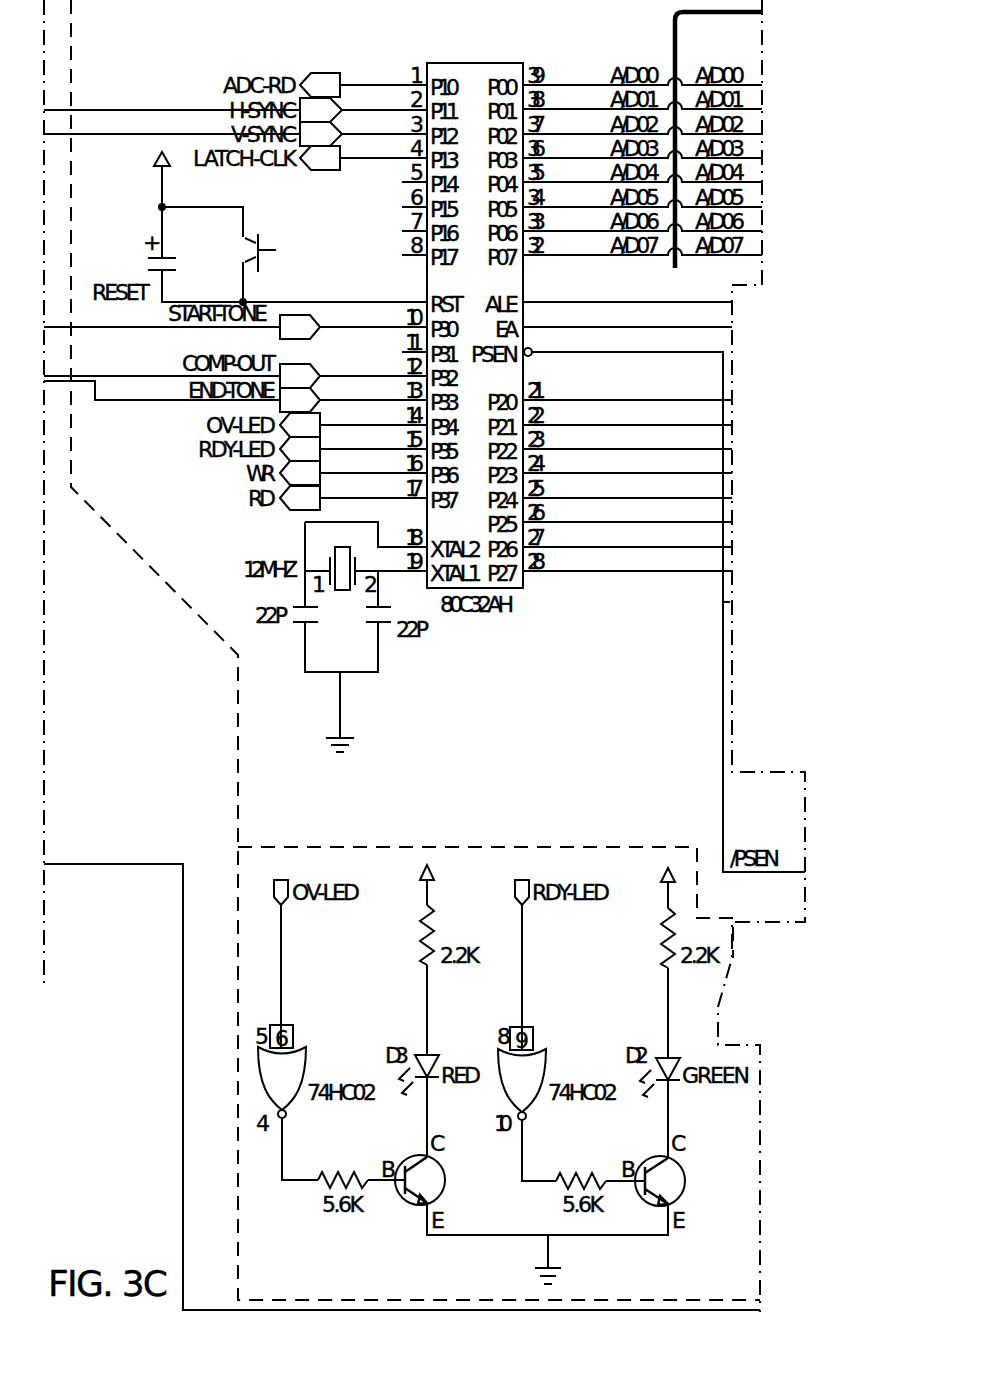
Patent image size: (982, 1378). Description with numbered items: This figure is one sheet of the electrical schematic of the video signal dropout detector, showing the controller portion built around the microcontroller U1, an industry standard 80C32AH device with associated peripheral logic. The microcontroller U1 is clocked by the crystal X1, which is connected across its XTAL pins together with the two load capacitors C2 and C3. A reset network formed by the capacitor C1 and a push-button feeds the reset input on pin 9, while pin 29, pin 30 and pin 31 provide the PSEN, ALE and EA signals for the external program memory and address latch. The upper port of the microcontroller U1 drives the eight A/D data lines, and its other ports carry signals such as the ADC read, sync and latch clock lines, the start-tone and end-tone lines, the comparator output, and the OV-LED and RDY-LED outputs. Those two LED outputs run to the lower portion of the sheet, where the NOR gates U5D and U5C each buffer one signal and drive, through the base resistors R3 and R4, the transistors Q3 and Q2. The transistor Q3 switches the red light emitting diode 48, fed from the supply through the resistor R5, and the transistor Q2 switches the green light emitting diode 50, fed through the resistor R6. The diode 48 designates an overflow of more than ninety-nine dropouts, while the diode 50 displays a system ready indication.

The light emitting diode 48 is at (431, 1056).
The light emitting diode 50 is at (663, 1058).
The microcontroller 80C32AH U1 is at (475, 312).
The transistor Q3 is at (438, 1180).
The transistor Q2 is at (675, 1181).
The resistor R3 5.6K R3 is at (343, 1167).
The resistor R4 5.6K R4 is at (581, 1168).
The resistor R5 2.2K R5 is at (412, 936).
The resistor R6 2.2K R6 is at (652, 938).
The capacitor C1 10UF C1 is at (185, 257).
The capacitor C2 22P C2 is at (395, 608).
The capacitor C3 22P C3 is at (291, 631).
The crystal X1 12MHZ X1 is at (341, 587).
The NOR gate U5C 74HC02 U5C is at (522, 1073).
The NOR gate U5D 74HC02 U5D is at (282, 1071).
The RST pin 9 is at (335, 293).
The PSEN pin 29 is at (664, 601).
The ALE pin 30 is at (627, 293).
The EA pin 31 is at (627, 318).